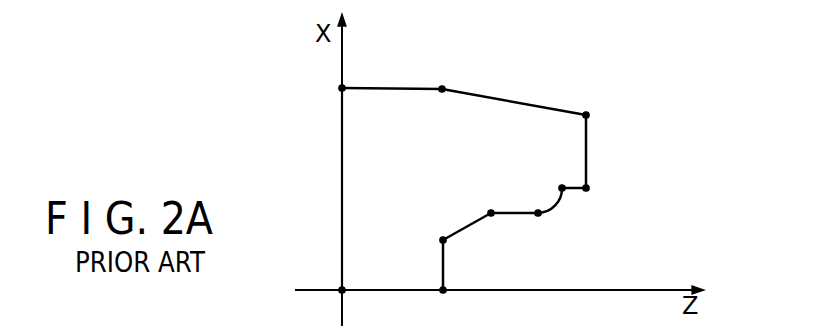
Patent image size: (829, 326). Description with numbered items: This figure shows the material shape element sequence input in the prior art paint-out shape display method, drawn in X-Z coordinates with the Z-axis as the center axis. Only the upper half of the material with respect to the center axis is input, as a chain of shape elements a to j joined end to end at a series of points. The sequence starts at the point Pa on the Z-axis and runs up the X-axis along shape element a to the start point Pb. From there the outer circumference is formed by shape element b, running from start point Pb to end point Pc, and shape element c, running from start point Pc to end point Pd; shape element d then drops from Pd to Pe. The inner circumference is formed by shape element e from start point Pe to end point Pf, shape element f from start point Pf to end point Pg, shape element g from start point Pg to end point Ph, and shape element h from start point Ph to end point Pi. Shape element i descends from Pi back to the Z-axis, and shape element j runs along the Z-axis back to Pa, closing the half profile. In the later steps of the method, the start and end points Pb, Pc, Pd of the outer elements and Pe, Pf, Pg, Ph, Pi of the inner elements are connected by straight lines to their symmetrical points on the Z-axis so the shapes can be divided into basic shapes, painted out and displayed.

The shape element a is at (342, 180).
The shape element b is at (392, 88).
The shape element c is at (506, 100).
The shape element d is at (588, 142).
The shape element e is at (574, 190).
The shape element f is at (554, 208).
The shape element g is at (512, 214).
The shape element h is at (467, 226).
The shape element i is at (444, 262).
The shape element j is at (375, 290).
The point Pa is at (342, 290).
The start point Pb is at (342, 88).
The start point Pc is at (442, 88).
The end point Pd is at (587, 114).
The start point Pe is at (587, 188).
The start point Pf is at (562, 187).
The start point Pg is at (538, 212).
The start point Ph is at (491, 212).
The end point Pi is at (443, 239).